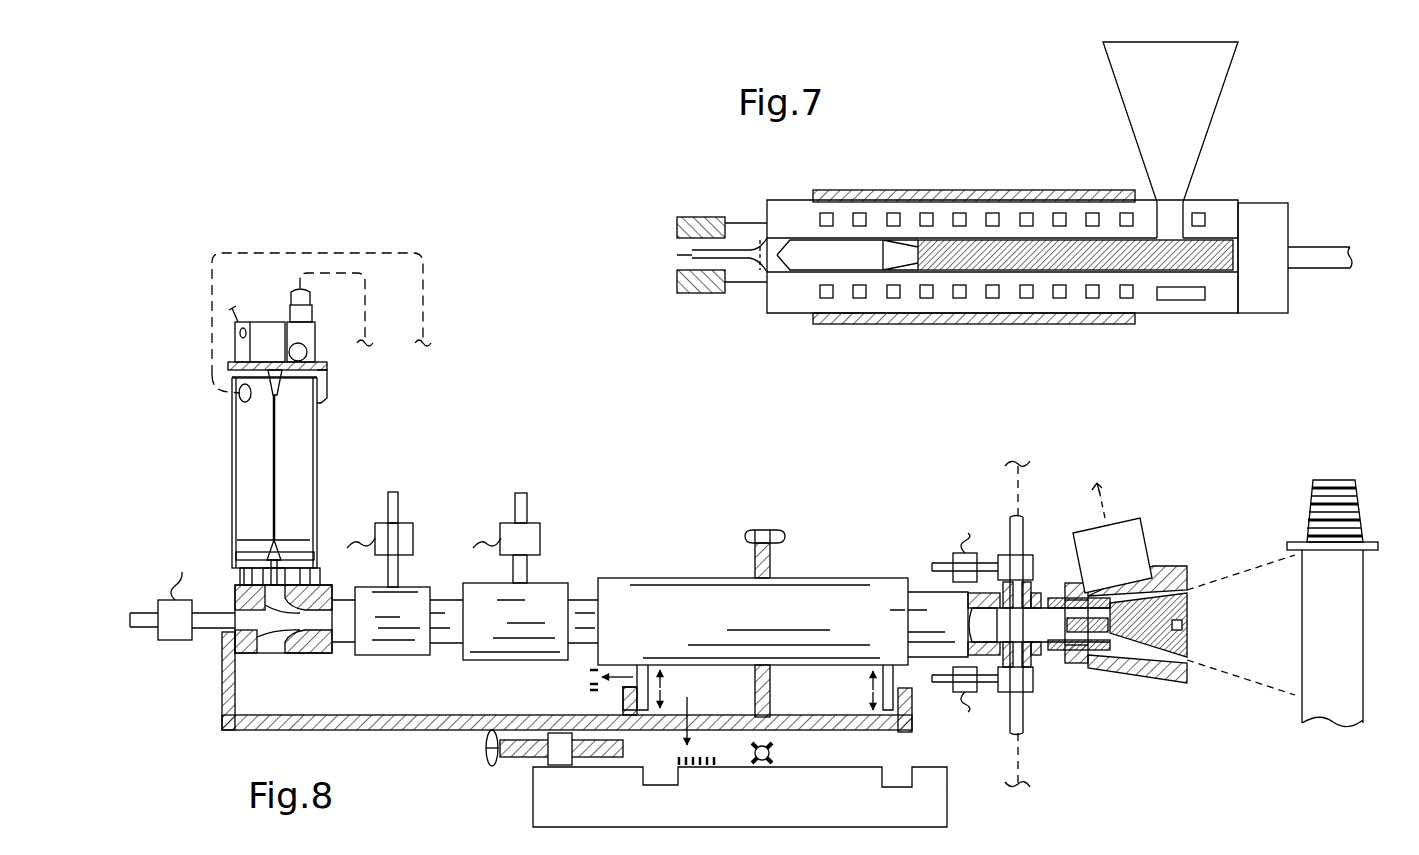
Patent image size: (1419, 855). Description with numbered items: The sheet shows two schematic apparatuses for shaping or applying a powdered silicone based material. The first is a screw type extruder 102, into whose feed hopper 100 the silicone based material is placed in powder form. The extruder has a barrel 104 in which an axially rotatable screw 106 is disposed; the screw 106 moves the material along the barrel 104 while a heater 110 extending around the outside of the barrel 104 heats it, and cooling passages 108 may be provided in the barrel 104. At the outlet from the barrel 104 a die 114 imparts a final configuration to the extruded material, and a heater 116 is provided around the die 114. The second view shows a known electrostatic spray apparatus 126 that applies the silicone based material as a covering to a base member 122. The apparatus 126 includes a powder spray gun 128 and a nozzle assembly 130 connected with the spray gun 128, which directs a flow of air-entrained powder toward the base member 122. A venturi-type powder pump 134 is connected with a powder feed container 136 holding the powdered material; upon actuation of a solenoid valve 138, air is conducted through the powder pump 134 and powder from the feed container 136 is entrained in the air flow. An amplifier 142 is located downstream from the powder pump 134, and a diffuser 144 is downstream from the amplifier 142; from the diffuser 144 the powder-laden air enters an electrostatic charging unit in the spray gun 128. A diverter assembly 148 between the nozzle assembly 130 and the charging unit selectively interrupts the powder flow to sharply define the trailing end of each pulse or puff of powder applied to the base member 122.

In FIG. 7, the feed hopper 100 is at (1193, 87).
In FIG. 7, the screw type extruder 102 is at (916, 152).
In FIG. 7, the barrel 104 is at (1147, 303).
In FIG. 7, the screw 106 is at (1112, 262).
In FIG. 7, the cooling passages 108 is at (993, 298).
In FIG. 7, the heater 110 is at (1013, 200).
In FIG. 7, the die 114 is at (697, 265).
In FIG. 7, the heater 116 is at (693, 222).
In FIG. 8, the base member 122 is at (1317, 698).
In FIG. 8, the electrostatic spray apparatus 126 is at (708, 500).
In FIG. 8, the powder spray gun 128 is at (648, 575).
In FIG. 8, the nozzle assembly 130 is at (1117, 686).
In FIG. 8, the venturi-type powder pump 134 is at (302, 655).
In FIG. 8, the powder feed container 136 is at (226, 504).
In FIG. 8, the solenoid valve 138 is at (178, 635).
In FIG. 8, the amplifier 142 is at (383, 643).
In FIG. 8, the diffuser 144 is at (520, 645).
In FIG. 8, the diverter assembly 148 is at (982, 523).